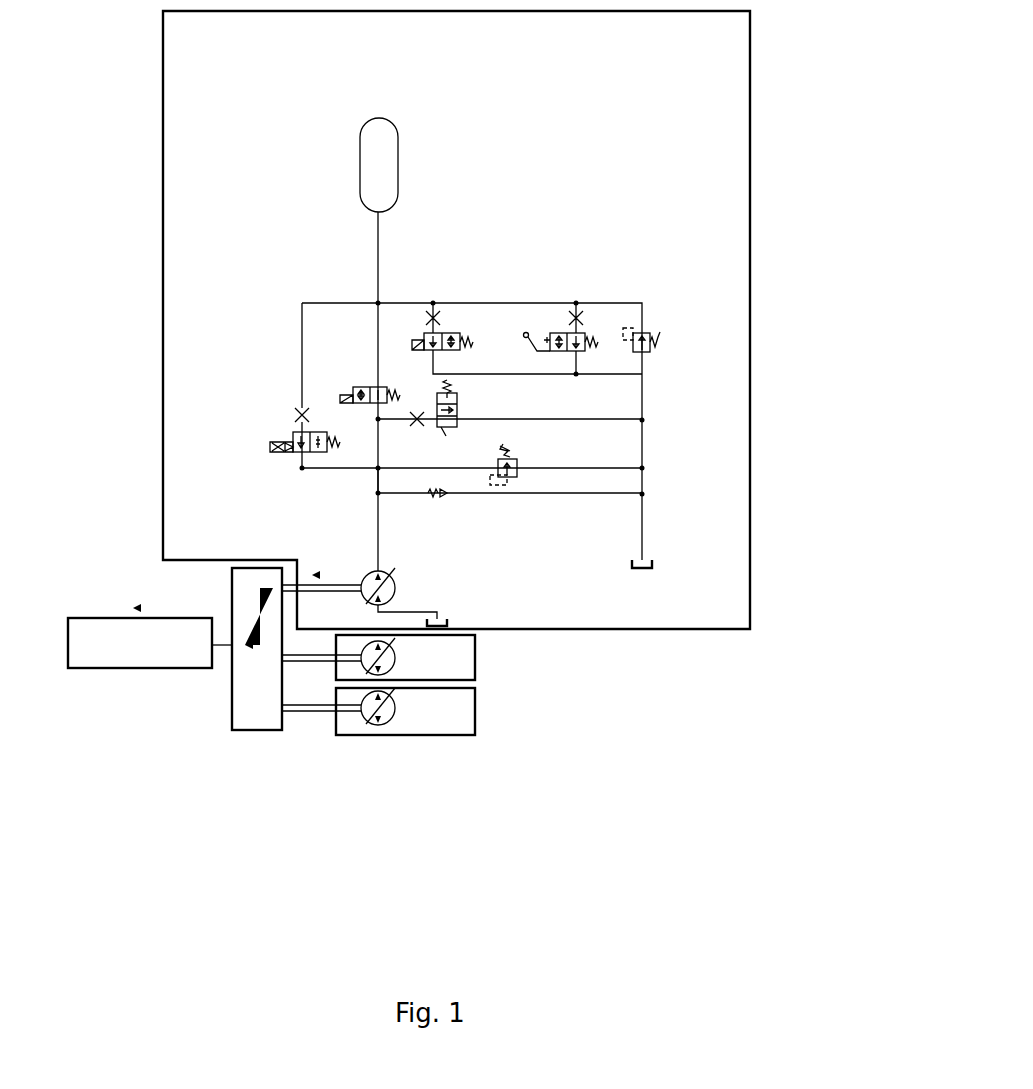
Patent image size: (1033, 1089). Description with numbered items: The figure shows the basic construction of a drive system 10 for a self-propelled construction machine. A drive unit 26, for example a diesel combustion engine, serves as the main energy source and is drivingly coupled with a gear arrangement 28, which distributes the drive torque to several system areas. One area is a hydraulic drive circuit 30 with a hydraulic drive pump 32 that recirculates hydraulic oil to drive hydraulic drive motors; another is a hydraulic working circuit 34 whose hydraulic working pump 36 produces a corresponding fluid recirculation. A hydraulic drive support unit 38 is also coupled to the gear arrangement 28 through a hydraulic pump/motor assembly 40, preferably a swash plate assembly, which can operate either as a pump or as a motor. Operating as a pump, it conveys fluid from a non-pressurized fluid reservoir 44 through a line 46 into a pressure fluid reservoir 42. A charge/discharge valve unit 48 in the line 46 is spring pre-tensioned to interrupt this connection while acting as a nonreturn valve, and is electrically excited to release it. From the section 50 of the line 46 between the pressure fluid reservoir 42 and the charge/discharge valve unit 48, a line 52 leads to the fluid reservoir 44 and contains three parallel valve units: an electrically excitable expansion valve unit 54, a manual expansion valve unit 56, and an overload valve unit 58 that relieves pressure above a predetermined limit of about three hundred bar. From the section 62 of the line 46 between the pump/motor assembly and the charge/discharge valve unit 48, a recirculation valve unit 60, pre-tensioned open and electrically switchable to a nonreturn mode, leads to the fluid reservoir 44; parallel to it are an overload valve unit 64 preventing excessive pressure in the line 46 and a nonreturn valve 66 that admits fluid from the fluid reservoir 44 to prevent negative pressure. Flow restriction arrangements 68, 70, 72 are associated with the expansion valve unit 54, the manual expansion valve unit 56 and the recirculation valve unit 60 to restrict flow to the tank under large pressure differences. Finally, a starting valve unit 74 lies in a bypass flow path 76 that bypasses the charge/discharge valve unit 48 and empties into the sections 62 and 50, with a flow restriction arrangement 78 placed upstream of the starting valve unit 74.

The drive system 10 is at (779, 58).
The drive unit 26 is at (90, 617).
The gear arrangement 28 is at (258, 732).
The hydraulic drive circuit 30 is at (475, 735).
The hydraulic drive pump 32 is at (393, 720).
The hydraulic working circuit 34 is at (477, 673).
The hydraulic working pump 36 is at (397, 657).
The hydraulic drive support unit 38 is at (160, 237).
The hydraulic pump/motor assembly 40 is at (397, 590).
The pressure fluid reservoir 42 is at (381, 118).
The fluid reservoir 44 is at (653, 564).
The line 46 is at (372, 533).
The charge/discharge valve unit 48 is at (353, 387).
The section 50 is at (378, 232).
The line 52 is at (437, 330).
The expansion valve unit 54 is at (420, 332).
The manual expansion valve unit 56 is at (587, 330).
The overload valve unit 58 is at (650, 333).
The recirculation valve unit 60 is at (460, 390).
The section 62 is at (372, 485).
The overload valve unit 64 is at (517, 477).
The nonreturn valve 66 is at (445, 497).
The flow restriction arrangement 68 is at (430, 316).
The flow restriction arrangement 70 is at (583, 310).
The flow restriction arrangement 72 is at (418, 425).
The starting valve unit 74 is at (293, 452).
The bypass flow path 76 is at (298, 371).
The flow restriction arrangement 78 is at (297, 415).